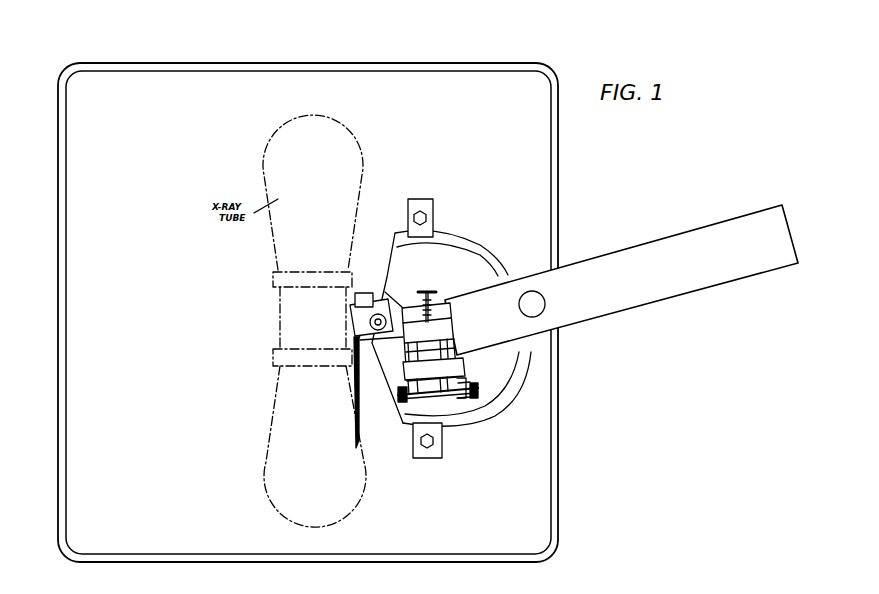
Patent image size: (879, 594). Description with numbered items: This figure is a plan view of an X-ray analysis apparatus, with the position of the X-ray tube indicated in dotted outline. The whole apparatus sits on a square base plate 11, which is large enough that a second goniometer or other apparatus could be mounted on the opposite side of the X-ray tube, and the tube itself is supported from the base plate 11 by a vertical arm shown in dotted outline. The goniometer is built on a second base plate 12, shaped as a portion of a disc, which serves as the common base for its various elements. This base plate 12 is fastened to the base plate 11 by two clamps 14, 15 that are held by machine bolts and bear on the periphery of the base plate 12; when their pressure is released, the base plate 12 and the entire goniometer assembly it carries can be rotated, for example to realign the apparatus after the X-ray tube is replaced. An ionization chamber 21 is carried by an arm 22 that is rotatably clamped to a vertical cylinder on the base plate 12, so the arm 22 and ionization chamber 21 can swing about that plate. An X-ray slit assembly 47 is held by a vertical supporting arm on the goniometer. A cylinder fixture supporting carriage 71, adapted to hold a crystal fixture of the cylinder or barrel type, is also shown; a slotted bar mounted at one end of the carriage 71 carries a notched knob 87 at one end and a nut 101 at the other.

The base plate 11 is at (205, 70).
The base plate 12 is at (487, 255).
The clamp 14 is at (427, 458).
The clamp 15 is at (422, 199).
The ionization chamber 21 is at (677, 236).
The arm 22 is at (540, 274).
The X-ray slit assembly 47 is at (358, 306).
The cylinder fixture supporting carriage 71 is at (433, 387).
The notched knob 87 is at (472, 384).
The nut 101 is at (399, 395).